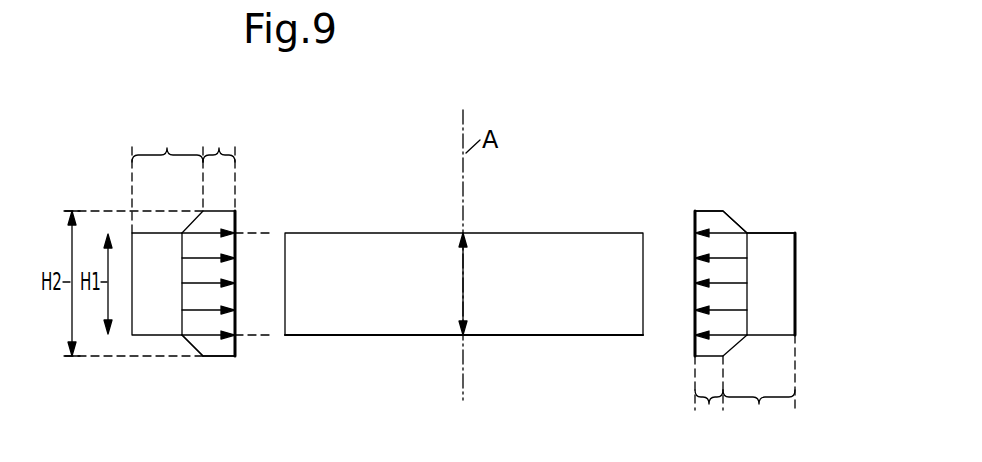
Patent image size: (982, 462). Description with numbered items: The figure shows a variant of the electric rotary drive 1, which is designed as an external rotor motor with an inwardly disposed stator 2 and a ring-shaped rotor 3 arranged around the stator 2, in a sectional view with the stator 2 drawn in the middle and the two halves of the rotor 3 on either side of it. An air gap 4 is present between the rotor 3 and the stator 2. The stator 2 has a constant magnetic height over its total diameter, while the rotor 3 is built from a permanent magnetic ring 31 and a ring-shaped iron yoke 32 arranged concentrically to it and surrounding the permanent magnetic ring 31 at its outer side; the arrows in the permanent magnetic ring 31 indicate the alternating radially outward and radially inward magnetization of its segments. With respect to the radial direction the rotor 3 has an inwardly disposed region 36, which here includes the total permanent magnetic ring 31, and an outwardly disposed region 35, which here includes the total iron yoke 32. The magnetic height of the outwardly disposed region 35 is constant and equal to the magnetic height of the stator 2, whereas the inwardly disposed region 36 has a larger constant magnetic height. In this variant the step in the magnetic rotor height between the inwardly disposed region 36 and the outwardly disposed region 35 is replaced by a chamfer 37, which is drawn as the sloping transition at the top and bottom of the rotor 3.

The electric rotary drive 1 is at (720, 133).
The stator 2 is at (569, 345).
The rotor 3 is at (809, 264).
The air gap 4 is at (665, 272).
The permanent magnetic ring 31 is at (710, 209).
The iron yoke 32 is at (763, 231).
The outwardly disposed region 35 is at (463, 278).
The inwardly disposed region 36 is at (463, 278).
The chamfer 37 is at (190, 345).